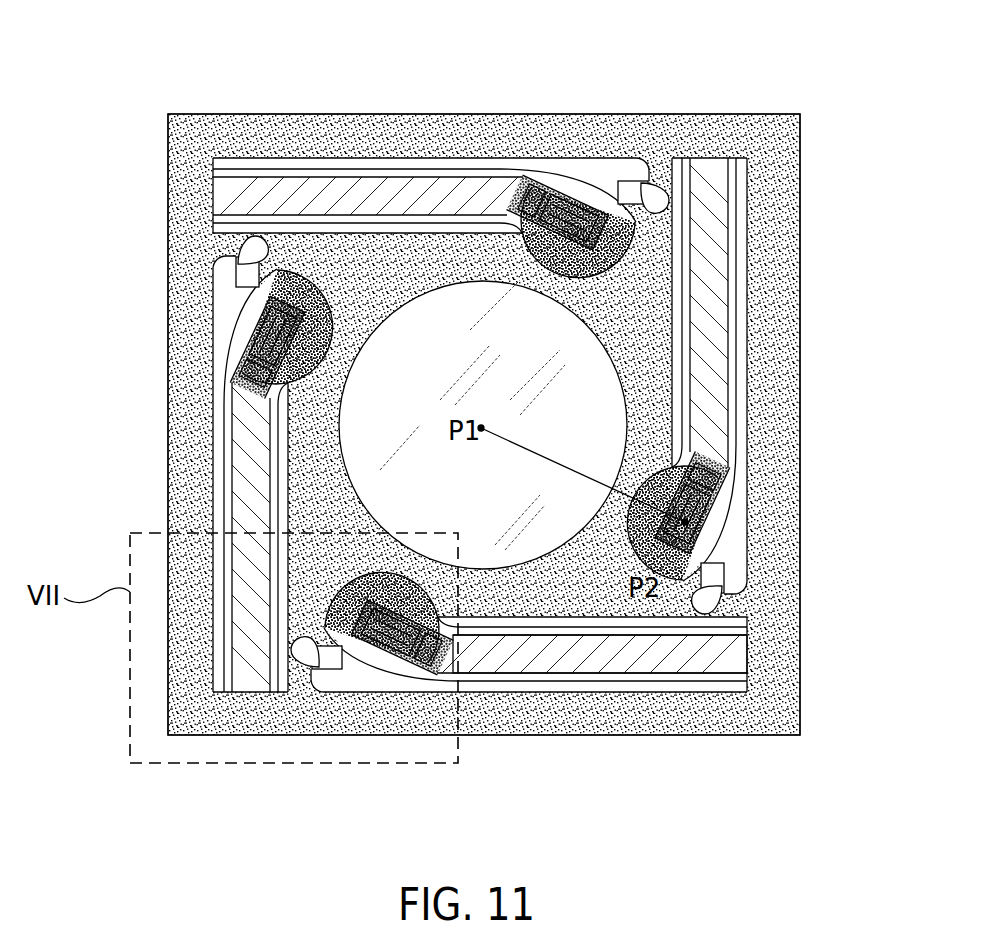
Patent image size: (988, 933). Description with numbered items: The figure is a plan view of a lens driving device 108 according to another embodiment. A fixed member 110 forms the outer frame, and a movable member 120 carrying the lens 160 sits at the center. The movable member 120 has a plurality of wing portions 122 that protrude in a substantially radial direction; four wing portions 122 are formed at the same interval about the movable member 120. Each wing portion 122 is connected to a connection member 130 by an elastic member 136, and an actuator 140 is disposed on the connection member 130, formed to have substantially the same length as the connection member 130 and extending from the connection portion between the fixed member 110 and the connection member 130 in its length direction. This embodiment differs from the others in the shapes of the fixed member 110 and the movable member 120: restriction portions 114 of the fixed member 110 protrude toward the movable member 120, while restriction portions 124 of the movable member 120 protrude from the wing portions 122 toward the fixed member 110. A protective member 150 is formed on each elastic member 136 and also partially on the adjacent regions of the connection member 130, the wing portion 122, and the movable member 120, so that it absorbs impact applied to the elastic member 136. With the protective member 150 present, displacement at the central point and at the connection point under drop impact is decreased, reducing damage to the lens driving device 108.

The lens driving device 108 is at (690, 88).
The fixed member 110 is at (787, 398).
The restriction portion 114 is at (712, 596).
The movable member 120 is at (633, 362).
The wing portion 122 is at (322, 645).
The restriction portion 124 is at (713, 555).
The connection member 130 is at (520, 672).
The elastic member 136 is at (355, 673).
The actuator 140 is at (632, 640).
The protective member 150 is at (438, 668).
The lens 160 is at (550, 335).